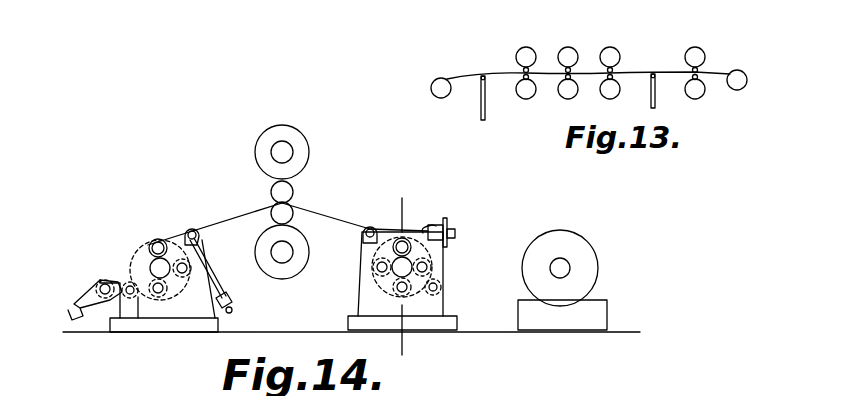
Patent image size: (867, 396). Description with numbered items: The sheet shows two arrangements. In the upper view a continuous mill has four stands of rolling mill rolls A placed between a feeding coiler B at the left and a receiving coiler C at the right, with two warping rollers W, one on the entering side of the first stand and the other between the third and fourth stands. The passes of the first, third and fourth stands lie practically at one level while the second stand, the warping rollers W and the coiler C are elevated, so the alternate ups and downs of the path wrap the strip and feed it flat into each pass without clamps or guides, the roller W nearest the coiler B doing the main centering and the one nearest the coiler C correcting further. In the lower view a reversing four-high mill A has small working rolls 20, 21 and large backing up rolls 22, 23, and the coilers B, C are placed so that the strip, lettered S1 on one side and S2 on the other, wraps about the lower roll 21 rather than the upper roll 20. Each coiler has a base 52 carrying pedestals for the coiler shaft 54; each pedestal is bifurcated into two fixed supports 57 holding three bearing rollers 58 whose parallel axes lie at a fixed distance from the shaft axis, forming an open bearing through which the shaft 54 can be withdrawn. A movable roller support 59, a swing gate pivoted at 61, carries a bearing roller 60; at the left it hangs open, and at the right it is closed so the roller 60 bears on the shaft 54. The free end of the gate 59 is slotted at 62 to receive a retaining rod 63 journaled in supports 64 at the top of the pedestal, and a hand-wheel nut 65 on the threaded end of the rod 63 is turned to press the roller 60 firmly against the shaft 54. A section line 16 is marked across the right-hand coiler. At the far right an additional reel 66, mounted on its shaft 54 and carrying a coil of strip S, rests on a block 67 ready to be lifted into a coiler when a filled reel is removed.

In FIG. 14, the section line 16 is at (409, 207).
In FIG. 14, the working roll 20 is at (270, 195).
In FIG. 14, the working roll 21 is at (272, 220).
In FIG. 14, the backing up roll 22 is at (308, 150).
In FIG. 14, the backing up roll 23 is at (296, 265).
In FIG. 14, the base 52 is at (442, 324).
In FIG. 14, the coiler shaft 54 is at (150, 268).
In FIG. 14, the fixed supports 57 is at (194, 288).
In FIG. 14, the bearing rollers 58 is at (156, 242).
In FIG. 14, the movable roller support 59 is at (105, 298).
In FIG. 14, the bearing roller 60 is at (101, 282).
In FIG. 14, the pivot 61 is at (132, 296).
In FIG. 14, the slot 62 is at (73, 312).
In FIG. 14, the retaining rod 63 is at (226, 292).
In FIG. 14, the supports 64 is at (199, 236).
In FIG. 14, the nut 65 is at (234, 300).
In FIG. 14, the additional reel 66 is at (583, 277).
In FIG. 14, the block 67 is at (592, 317).
In FIG. 13, the four-high mill A is at (529, 47).
In FIG. 14, the four-high mill A is at (301, 133).
In FIG. 13, the unwinding coiler B is at (442, 80).
In FIG. 14, the unwinding coiler B is at (138, 246).
In FIG. 13, the receiving coiler C is at (744, 72).
In FIG. 14, the receiving coiler C is at (450, 260).
In FIG. 13, the warping roller W is at (483, 74).
In FIG. 14, the strip S is at (578, 229).
In FIG. 14, the strip S' S1 is at (250, 196).
In FIG. 14, the strip S2 is at (303, 198).